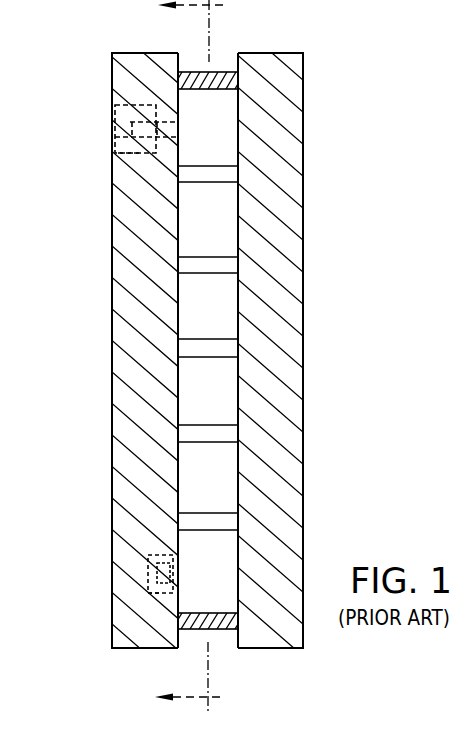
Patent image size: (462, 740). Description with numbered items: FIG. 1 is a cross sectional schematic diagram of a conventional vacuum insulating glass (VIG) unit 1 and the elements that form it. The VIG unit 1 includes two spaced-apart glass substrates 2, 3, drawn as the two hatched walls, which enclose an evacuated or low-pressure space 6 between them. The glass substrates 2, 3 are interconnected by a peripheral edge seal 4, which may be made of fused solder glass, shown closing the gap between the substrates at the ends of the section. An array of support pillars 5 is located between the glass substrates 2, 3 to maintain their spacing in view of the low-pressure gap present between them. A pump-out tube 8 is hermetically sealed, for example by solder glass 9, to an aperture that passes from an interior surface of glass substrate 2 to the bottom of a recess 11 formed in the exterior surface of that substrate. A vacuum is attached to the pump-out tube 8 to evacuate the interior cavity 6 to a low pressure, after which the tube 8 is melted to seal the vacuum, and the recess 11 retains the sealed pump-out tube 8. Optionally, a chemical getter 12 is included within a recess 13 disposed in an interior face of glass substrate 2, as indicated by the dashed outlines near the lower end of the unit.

The VIG unit 1 is at (318, 128).
The glass substrate 2 is at (112, 395).
The glass substrate 3 is at (282, 283).
The peripheral edge seal 4 is at (223, 80).
The support pillars 5 is at (213, 352).
The evacuated space 6 is at (193, 465).
The pump-out tube 8 is at (120, 131).
The solder glass 9 is at (143, 115).
The recess 11 is at (126, 162).
The chemical getter 12 is at (157, 572).
The recess 13 is at (150, 602).